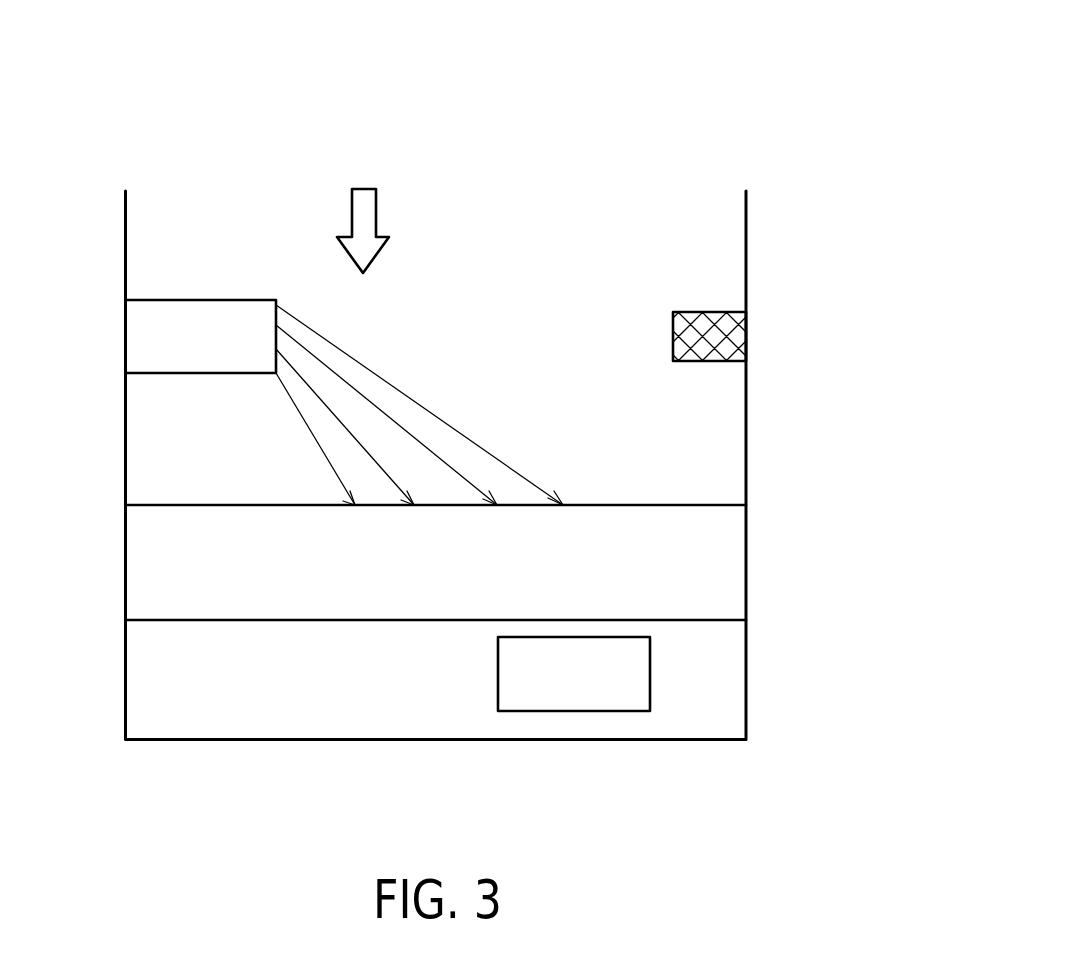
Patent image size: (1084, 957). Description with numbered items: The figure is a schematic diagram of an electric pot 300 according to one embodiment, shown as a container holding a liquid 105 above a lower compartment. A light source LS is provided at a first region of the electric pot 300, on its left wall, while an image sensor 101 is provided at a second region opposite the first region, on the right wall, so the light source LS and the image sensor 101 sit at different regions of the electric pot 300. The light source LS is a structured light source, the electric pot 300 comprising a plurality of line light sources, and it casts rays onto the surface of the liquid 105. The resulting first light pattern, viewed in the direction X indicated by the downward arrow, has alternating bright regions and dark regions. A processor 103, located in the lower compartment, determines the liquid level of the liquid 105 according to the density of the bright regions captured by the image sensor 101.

The electric pot 300 is at (669, 110).
The light source LS is at (137, 319).
The image sensor 101 is at (736, 332).
The liquid 105 is at (138, 560).
The processor 103 is at (623, 711).